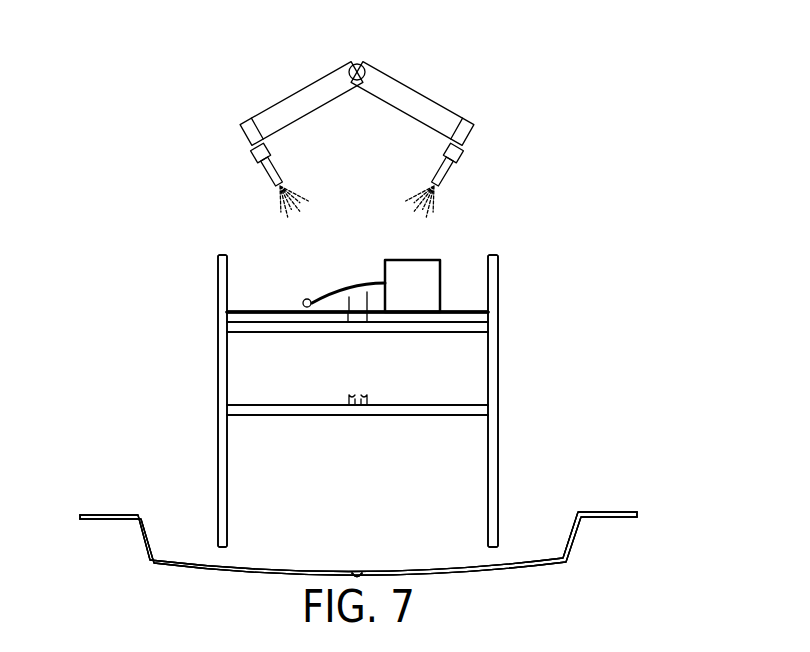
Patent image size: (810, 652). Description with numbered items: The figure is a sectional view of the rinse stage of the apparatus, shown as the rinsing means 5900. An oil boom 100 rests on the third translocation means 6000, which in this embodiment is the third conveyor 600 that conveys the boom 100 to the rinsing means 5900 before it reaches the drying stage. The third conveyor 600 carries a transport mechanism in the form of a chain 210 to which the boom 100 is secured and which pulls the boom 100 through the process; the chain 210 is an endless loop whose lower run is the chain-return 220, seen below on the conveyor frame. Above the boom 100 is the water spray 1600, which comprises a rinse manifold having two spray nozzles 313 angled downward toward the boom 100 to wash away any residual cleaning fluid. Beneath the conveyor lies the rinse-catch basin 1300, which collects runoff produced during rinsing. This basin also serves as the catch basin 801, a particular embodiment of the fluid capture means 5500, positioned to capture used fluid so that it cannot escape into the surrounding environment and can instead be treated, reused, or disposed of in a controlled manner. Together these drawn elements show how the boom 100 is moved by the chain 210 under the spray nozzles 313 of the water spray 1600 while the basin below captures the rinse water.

The water spray 1600 is at (417, 92).
The spray nozzles 313 is at (272, 182).
The boom 100 is at (413, 260).
The chain 210 is at (353, 303).
The chain-return 220 is at (353, 397).
The third conveyor 600 is at (498, 412).
The third translocation means 6000 is at (408, 401).
The catch basin 801 is at (600, 512).
The rinse-catch basin 1300 is at (396, 515).
The fluid capture means 5500 is at (396, 530).
The rinsing means 5900 is at (165, 210).